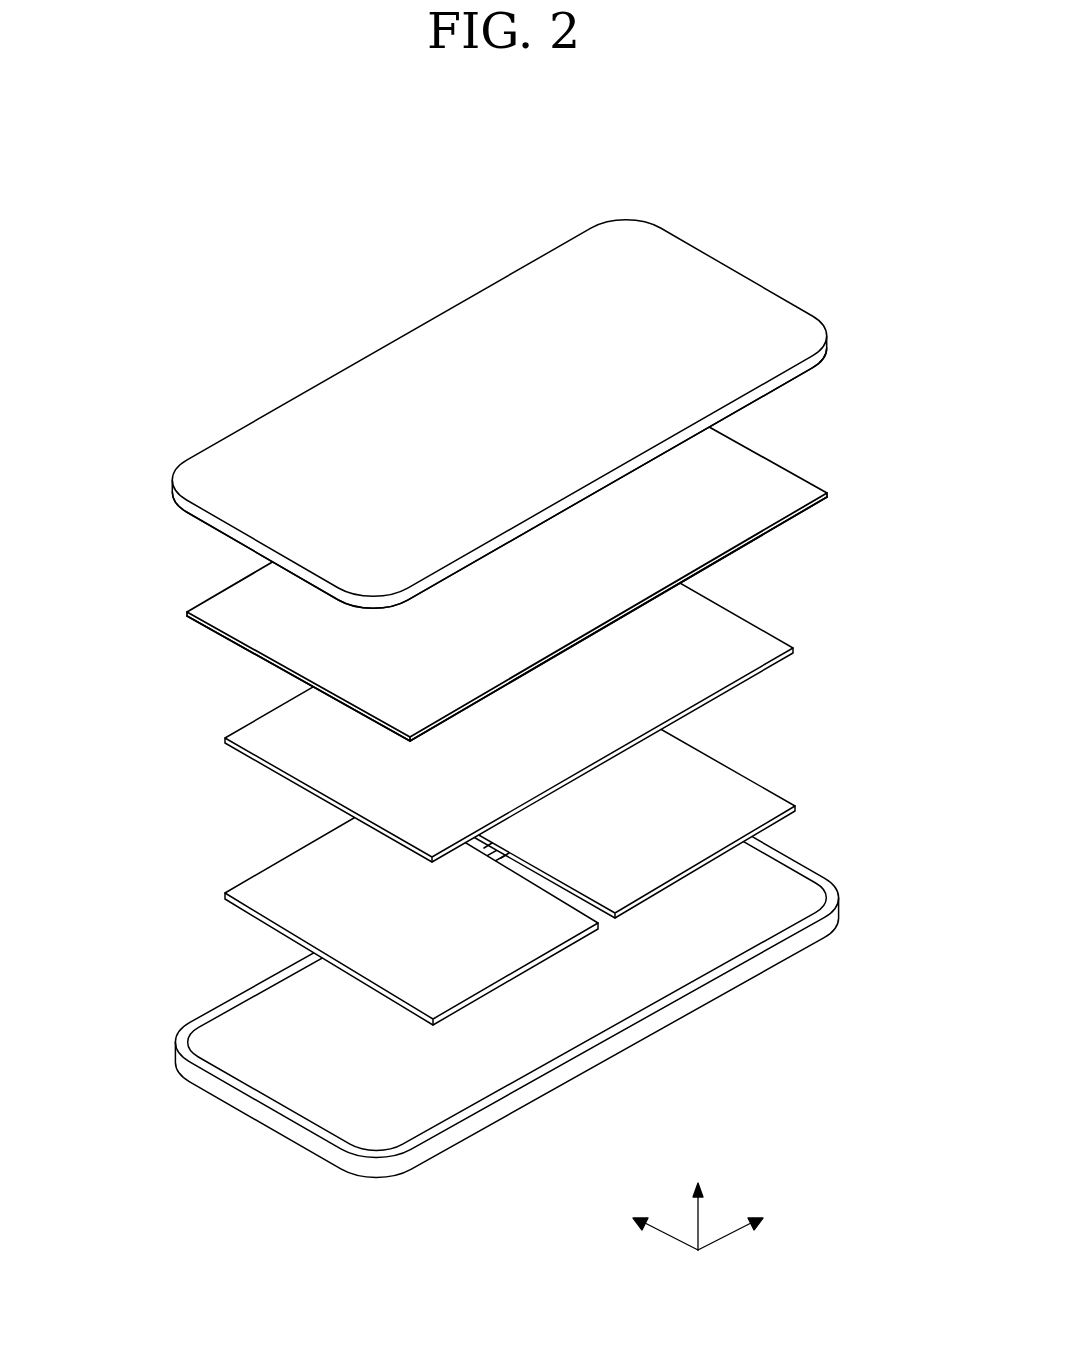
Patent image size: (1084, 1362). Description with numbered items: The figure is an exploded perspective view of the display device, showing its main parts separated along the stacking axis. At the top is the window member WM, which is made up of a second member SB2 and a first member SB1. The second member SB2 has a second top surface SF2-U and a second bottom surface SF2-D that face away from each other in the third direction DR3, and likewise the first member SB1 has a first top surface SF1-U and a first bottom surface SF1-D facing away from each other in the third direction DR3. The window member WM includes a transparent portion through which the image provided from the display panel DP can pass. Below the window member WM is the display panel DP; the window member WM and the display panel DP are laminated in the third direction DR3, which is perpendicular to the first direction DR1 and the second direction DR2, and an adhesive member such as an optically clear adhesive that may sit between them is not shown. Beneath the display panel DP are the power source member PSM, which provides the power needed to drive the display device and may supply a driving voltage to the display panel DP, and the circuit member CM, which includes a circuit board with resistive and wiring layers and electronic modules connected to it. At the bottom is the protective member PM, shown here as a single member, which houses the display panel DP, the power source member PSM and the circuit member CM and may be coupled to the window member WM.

The window member WM is at (514, 480).
The second member SB2 is at (536, 414).
The first member SB1 is at (489, 554).
The second top surface SF2-U is at (358, 390).
The second bottom surface SF2-D is at (291, 437).
The first top surface SF1-U is at (236, 603).
The first bottom surface SF1-D is at (253, 616).
The display panel DP is at (768, 647).
The circuit member CM is at (770, 800).
The power source member PSM is at (266, 888).
The protective member PM is at (700, 998).
The first direction DR1 is at (645, 1221).
The second direction DR2 is at (753, 1221).
The third direction DR3 is at (703, 1205).